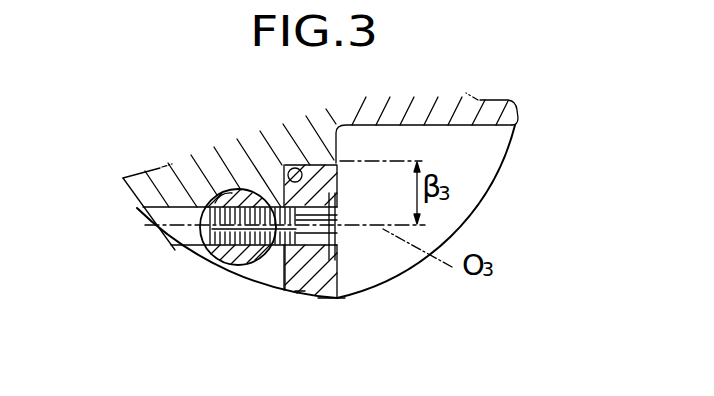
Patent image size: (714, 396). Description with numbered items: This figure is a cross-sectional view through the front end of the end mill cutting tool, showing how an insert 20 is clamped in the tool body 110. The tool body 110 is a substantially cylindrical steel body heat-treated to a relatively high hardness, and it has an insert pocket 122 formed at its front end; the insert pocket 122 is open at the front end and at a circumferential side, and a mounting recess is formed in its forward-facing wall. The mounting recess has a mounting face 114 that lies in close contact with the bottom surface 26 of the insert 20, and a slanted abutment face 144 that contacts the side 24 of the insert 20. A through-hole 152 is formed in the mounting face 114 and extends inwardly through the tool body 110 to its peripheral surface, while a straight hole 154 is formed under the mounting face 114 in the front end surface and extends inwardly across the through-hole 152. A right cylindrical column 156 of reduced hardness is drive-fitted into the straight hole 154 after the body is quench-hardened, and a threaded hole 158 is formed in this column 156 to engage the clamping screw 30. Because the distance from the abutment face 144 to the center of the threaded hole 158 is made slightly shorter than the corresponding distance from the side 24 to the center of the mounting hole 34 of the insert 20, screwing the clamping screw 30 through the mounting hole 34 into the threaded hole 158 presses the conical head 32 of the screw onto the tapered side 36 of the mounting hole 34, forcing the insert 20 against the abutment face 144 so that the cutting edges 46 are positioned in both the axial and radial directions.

The insert 20 is at (338, 287).
The side of the insert 24 is at (316, 161).
The bottom surface of the insert 26 is at (256, 283).
The clamping screw 30 is at (287, 216).
The conical head 32 is at (318, 238).
The mounting hole 34 is at (324, 300).
The tapered side 36 is at (328, 200).
The cutting edges 46 is at (337, 300).
The tool body 110 is at (490, 106).
The mounting face 114 is at (300, 292).
The insert pocket 122 is at (480, 153).
The abutment face 144 is at (278, 173).
The through-hole 152 is at (140, 217).
The straight hole 154 is at (217, 185).
The right cylindrical column 156 is at (220, 267).
The threaded hole 158 is at (205, 231).